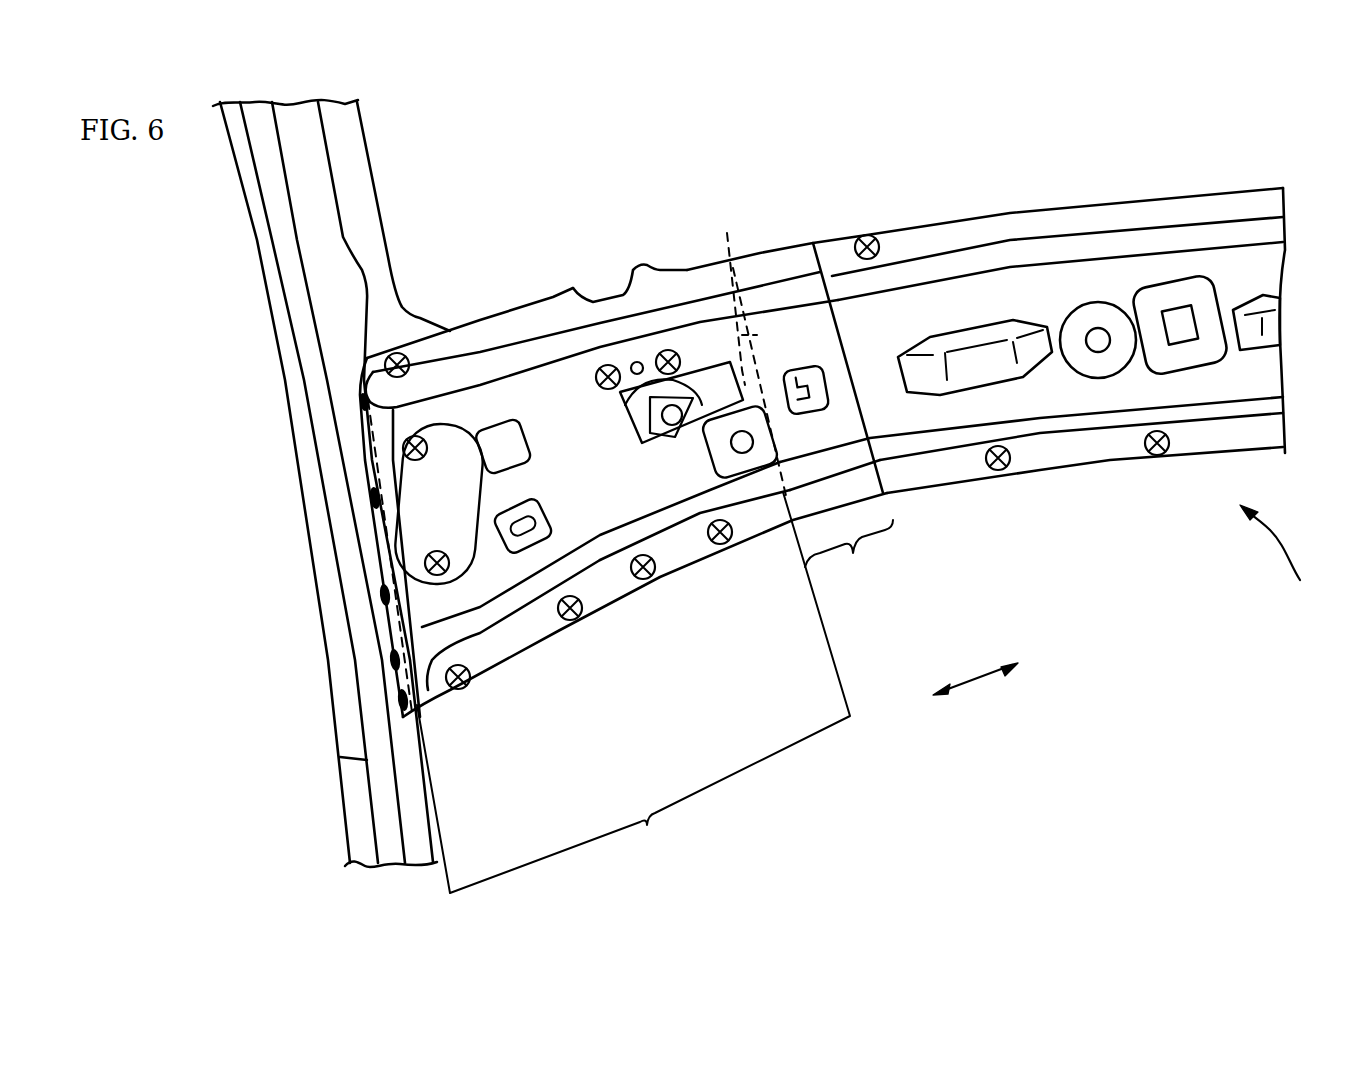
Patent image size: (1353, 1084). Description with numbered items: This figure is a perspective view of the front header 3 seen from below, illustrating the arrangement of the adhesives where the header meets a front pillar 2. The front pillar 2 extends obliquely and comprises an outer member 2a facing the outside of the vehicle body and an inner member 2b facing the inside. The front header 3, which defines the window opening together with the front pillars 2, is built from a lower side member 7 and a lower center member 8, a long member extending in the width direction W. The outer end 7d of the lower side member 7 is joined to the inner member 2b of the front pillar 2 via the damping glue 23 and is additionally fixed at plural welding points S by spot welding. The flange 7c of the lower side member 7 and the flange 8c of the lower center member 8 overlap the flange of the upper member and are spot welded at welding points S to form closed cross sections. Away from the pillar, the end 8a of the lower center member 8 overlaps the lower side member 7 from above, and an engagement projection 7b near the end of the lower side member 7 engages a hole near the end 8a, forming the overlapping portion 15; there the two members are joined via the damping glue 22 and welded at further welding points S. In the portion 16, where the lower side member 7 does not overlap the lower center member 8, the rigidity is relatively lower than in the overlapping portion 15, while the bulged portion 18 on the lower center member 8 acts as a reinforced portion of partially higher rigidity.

The front pillar 2 is at (337, 732).
The outer member 2a is at (330, 633).
The inner member 2b is at (348, 357).
The front header 3 is at (1281, 553).
The lower side member 7 is at (780, 327).
The engagement projection 7b is at (813, 367).
The flange 7c is at (547, 313).
The outer end 7d is at (367, 452).
The lower center member 8 is at (1043, 280).
The end 8a is at (780, 490).
The flange 8c is at (1143, 210).
The overlapping portion 15 is at (849, 557).
The portion 16 is at (633, 692).
The bulged portion 18 is at (967, 367).
The damping glue 22 is at (703, 349).
The damping glue 23 is at (373, 553).
The welding point S is at (420, 438).
The width direction W is at (975, 685).